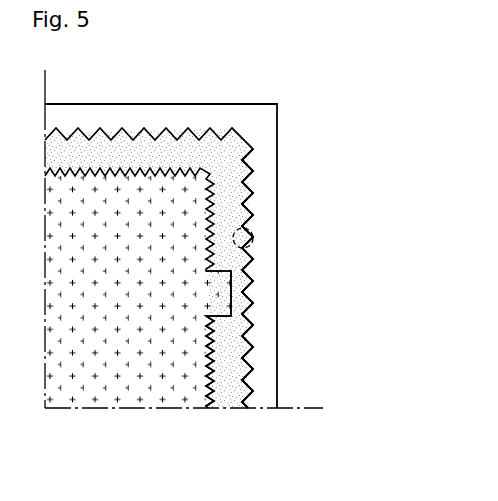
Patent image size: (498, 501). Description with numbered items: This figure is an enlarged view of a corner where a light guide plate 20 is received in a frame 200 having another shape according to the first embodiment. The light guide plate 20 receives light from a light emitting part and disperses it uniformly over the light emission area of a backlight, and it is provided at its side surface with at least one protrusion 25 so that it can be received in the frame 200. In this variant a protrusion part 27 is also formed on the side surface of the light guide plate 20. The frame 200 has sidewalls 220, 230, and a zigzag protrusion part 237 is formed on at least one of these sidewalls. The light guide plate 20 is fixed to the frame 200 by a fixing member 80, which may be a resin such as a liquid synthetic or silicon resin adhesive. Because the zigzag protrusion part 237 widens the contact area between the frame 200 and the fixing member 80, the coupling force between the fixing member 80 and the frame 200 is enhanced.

The frame 200 is at (286, 120).
The sidewall 220 is at (120, 118).
The fixing member 80 is at (226, 172).
The sidewall 230 is at (266, 206).
The zigzag protrusion part 237 is at (254, 234).
The protrusion 25 is at (221, 292).
The protrusion part 27 is at (213, 354).
The light guide plate 20 is at (128, 387).